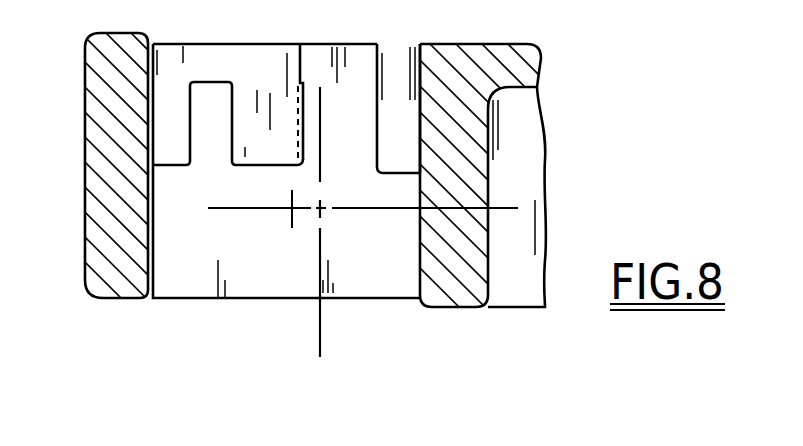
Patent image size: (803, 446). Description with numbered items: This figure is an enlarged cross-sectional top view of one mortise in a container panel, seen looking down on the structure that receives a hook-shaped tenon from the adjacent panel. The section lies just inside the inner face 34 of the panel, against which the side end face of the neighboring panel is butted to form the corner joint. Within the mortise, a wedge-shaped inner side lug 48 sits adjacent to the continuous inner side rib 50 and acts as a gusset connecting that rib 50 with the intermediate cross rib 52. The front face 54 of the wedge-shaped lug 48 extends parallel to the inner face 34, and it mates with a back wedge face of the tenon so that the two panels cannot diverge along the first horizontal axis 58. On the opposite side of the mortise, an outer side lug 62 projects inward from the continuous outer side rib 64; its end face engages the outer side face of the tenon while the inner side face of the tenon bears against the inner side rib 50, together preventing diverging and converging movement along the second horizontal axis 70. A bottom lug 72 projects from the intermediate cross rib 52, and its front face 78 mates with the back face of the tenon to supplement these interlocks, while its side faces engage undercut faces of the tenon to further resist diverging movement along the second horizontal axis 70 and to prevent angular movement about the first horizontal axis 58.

The inner face 34 is at (528, 45).
The inner side lugs 48 is at (393, 86).
The continuous inner side ribs 50 is at (465, 290).
The intermediate cross ribs 52 is at (338, 265).
The front faces 54 is at (403, 178).
The first horizontal axis 58 is at (318, 332).
The outer side lugs 62 is at (170, 118).
The continuous outer side ribs 64 is at (128, 283).
The second horizontal axis 70 is at (250, 208).
The bottom lugs 72 is at (257, 118).
The front faces 78 is at (272, 168).